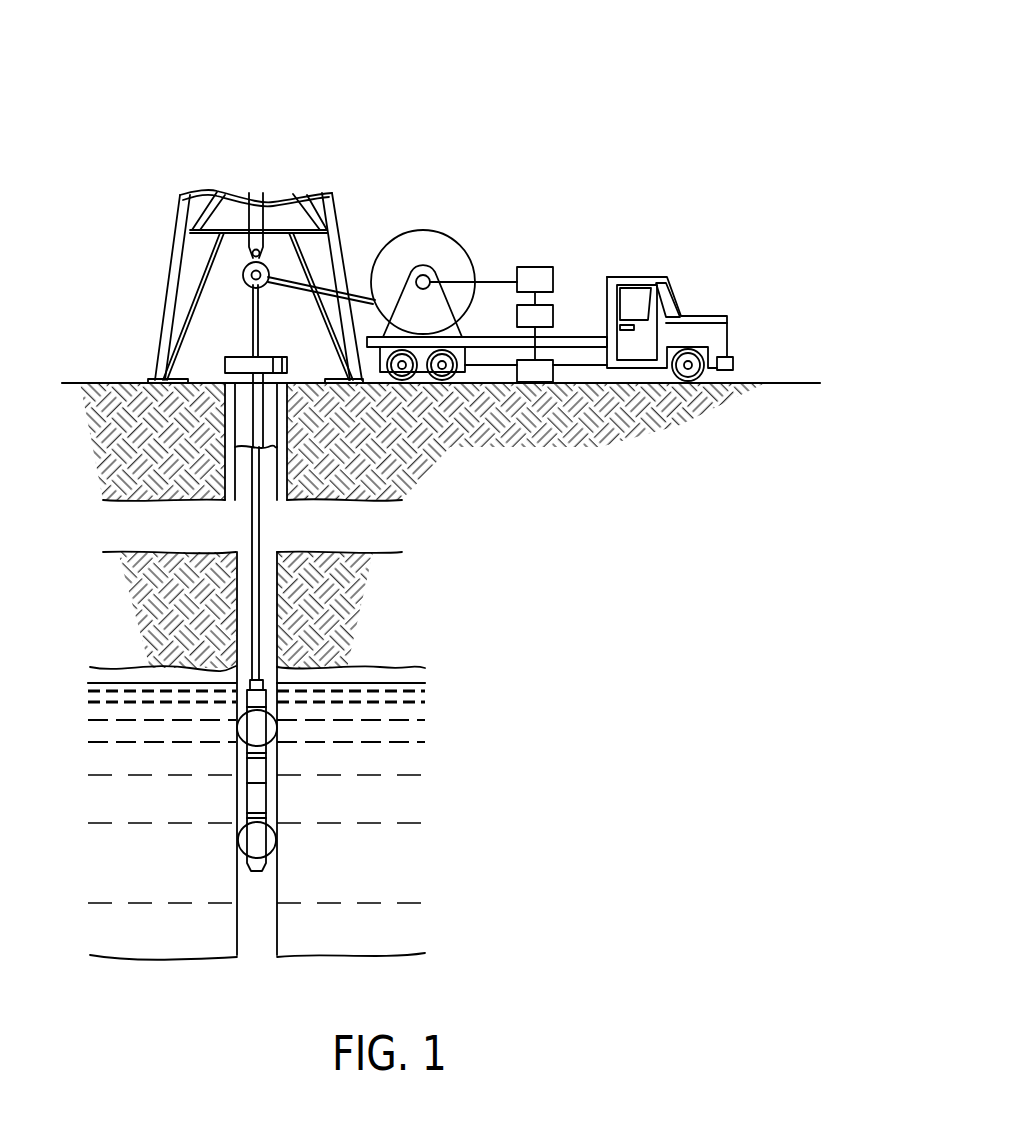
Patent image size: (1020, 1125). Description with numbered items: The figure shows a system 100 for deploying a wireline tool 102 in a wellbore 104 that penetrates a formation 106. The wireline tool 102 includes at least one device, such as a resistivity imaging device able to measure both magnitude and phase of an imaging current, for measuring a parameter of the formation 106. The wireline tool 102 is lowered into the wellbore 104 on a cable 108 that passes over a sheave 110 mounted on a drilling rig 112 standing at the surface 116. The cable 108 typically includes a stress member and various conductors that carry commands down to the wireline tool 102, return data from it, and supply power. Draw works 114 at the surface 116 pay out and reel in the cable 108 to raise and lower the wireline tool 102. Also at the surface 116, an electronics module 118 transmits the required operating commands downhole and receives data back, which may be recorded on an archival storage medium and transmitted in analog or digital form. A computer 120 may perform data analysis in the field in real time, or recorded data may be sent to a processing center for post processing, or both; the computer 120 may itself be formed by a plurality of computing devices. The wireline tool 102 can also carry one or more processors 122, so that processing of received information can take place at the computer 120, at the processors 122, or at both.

The system 100 is at (495, 120).
The wireline tool 102 is at (270, 768).
The wellbore 104 is at (247, 623).
The formation 106 is at (500, 618).
The cable 108 is at (254, 330).
The sheave 110 is at (243, 282).
The drilling rig 112 is at (177, 232).
The draw works 114 is at (418, 230).
The surface 116 is at (130, 383).
The electronics module 118 is at (536, 267).
The computer 120 is at (557, 302).
The processors 122 is at (247, 793).